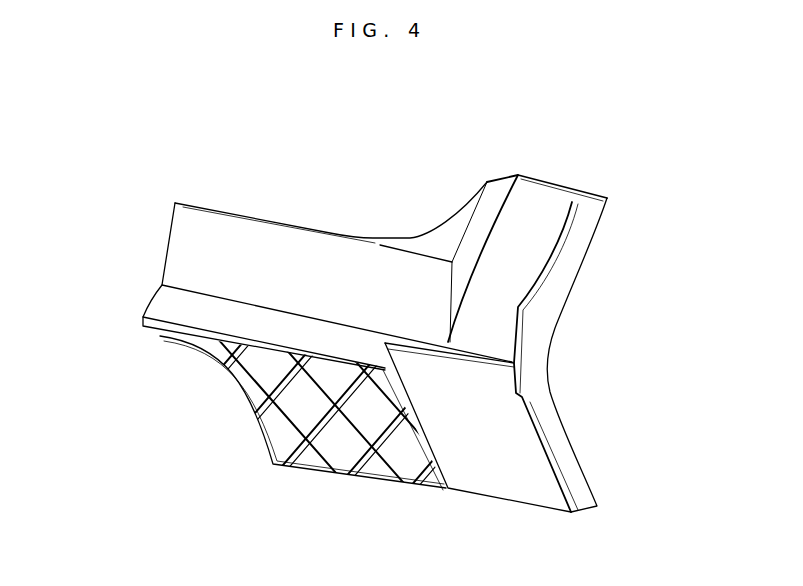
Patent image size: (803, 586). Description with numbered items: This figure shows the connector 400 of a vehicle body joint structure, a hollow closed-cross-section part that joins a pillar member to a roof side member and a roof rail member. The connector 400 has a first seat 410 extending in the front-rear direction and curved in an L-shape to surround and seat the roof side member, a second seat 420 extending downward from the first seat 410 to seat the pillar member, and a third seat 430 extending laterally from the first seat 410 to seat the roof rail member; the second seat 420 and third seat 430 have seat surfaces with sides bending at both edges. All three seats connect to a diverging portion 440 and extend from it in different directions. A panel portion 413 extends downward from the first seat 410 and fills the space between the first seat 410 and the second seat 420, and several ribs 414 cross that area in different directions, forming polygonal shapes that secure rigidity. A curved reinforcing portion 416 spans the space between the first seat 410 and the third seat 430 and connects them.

The connector 400 is at (385, 222).
The first seat 410 is at (183, 248).
The panel portion 413 is at (342, 442).
The ribs 414 is at (283, 417).
The reinforcing portion 416 is at (452, 217).
The second seat 420 is at (512, 448).
The third seat 430 is at (543, 207).
The diverging portion 440 is at (490, 353).